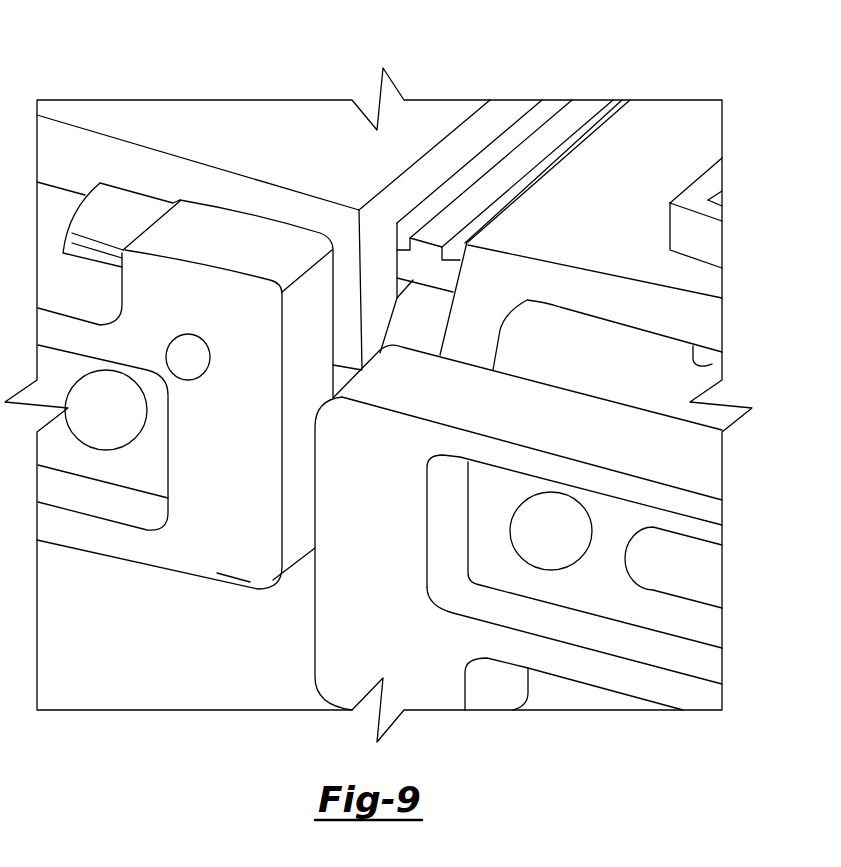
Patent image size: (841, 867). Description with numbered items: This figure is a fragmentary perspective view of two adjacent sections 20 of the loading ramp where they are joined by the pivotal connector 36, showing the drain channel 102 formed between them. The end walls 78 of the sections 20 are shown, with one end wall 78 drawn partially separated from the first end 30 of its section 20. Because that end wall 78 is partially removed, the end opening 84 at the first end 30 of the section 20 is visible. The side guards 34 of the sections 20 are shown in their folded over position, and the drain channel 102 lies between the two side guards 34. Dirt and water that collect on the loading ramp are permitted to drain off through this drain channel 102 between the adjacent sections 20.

The section 20 is at (230, 113).
The first end 30 is at (650, 313).
The side guard 34 is at (690, 222).
The pivotal connector 36 is at (492, 77).
The end wall 78 is at (217, 573).
The end opening 84 is at (712, 364).
The drain channel 102 is at (423, 315).